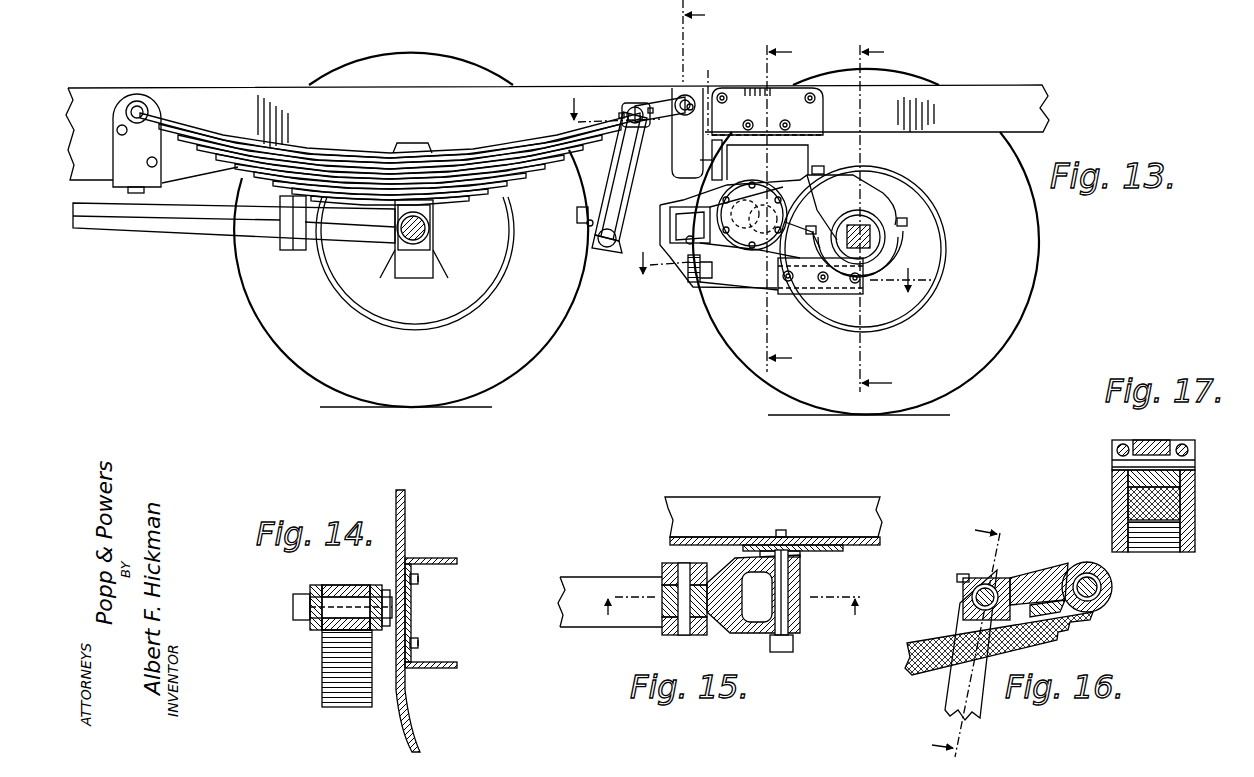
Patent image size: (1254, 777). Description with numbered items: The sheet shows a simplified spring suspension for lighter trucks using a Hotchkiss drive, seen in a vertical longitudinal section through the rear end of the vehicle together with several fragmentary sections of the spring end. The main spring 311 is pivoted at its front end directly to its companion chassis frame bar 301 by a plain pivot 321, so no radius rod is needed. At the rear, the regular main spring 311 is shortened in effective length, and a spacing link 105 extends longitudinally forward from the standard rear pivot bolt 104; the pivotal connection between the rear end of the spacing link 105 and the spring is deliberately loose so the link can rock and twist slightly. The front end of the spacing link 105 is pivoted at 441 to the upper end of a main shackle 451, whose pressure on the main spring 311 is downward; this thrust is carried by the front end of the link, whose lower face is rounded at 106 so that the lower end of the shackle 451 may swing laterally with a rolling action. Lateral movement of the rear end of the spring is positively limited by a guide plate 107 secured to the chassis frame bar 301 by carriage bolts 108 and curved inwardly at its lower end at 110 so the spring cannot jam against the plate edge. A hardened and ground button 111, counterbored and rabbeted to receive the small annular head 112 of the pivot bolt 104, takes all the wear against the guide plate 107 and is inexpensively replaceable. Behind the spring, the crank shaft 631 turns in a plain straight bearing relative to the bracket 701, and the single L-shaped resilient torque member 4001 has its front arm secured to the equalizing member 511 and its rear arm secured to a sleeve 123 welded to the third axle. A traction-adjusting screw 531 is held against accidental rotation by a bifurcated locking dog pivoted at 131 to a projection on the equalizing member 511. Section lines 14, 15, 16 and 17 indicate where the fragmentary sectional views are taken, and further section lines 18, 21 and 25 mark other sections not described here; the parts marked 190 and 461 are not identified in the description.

In FIG. 13, the section line 14— 14 is at (680, 178).
In FIG. 13, the section line 15— 15 is at (633, 95).
In FIG. 15, the section line 16— 16 is at (732, 602).
In FIG. 13, the section line 17— 17 is at (697, 41).
In FIG. 16, the section line 17— 17 is at (974, 637).
In FIG. 13, the section line 18 is at (774, 207).
In FIG. 13, the section line 21 is at (869, 219).
In FIG. 13, the section line 25 is at (769, 273).
In FIG. 13, the pivot bolt 104 is at (683, 95).
In FIG. 14, the pivot bolt 104 is at (294, 612).
In FIG. 15, the pivot bolt 104 is at (790, 654).
In FIG. 16, the pivot bolt 104 is at (1100, 600).
In FIG. 13, the spacing link 105 is at (664, 108).
In FIG. 14, the spacing link 105 is at (320, 588).
In FIG. 15, the spacing link 105 is at (728, 628).
In FIG. 16, the spacing link 105 is at (1048, 569).
In FIG. 17, the spacing link 105 is at (1168, 432).
In FIG. 16, the rounded lower face 106 is at (1030, 640).
In FIG. 17, the rounded lower face 106 is at (1186, 493).
In FIG. 13, the guide plate 107 is at (680, 88).
In FIG. 14, the guide plate 107 is at (410, 555).
In FIG. 15, the guide plate 107 is at (745, 551).
In FIG. 14, the carriage bolts 108 is at (418, 642).
In FIG. 15, the carriage bolts 108 is at (786, 530).
In FIG. 13, the inwardly curved lower end 110 is at (705, 170).
In FIG. 14, the inwardly curved lower end 110 is at (412, 716).
In FIG. 14, the hardened and ground button 111 is at (418, 648).
In FIG. 15, the hardened and ground button 111 is at (800, 556).
In FIG. 14, the small annular head 112 is at (386, 594).
In FIG. 13, the sleeve 123 is at (850, 285).
In FIG. 13, the locking dog pivot 131 is at (704, 244).
In FIG. 13, the arm 190 is at (695, 221).
In FIG. 13, the chassis frame bar 301 is at (560, 78).
In FIG. 14, the chassis frame bar 301 is at (440, 564).
In FIG. 15, the chassis frame bar 301 is at (826, 498).
In FIG. 13, the main spring 311 is at (350, 148).
In FIG. 14, the main spring 311 is at (324, 664).
In FIG. 15, the main spring 311 is at (628, 560).
In FIG. 16, the main spring 311 is at (934, 623).
In FIG. 17, the main spring 311 is at (1158, 555).
In FIG. 13, the plain pivot 321 is at (150, 114).
In FIG. 13, the shackle pivot 441 is at (650, 104).
In FIG. 15, the shackle pivot 441 is at (676, 565).
In FIG. 16, the shackle pivot 441 is at (965, 600).
In FIG. 17, the shackle pivot 441 is at (1116, 463).
In FIG. 13, the main shackle 451 is at (600, 192).
In FIG. 15, the main shackle 451 is at (665, 636).
In FIG. 16, the main shackle 451 is at (955, 695).
In FIG. 17, the main shackle 451 is at (1114, 546).
In FIG. 17, the clamp side wall 461 is at (1192, 542).
In FIG. 13, the equalizing member 511 is at (700, 285).
In FIG. 13, the traction-adjusting screw 531 is at (588, 230).
In FIG. 13, the crank shaft 631 is at (792, 192).
In FIG. 13, the bracket 701 is at (785, 161).
In FIG. 13, the resilient torque member 4001 is at (748, 290).